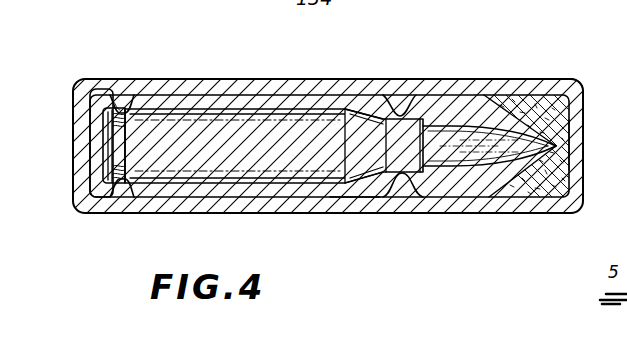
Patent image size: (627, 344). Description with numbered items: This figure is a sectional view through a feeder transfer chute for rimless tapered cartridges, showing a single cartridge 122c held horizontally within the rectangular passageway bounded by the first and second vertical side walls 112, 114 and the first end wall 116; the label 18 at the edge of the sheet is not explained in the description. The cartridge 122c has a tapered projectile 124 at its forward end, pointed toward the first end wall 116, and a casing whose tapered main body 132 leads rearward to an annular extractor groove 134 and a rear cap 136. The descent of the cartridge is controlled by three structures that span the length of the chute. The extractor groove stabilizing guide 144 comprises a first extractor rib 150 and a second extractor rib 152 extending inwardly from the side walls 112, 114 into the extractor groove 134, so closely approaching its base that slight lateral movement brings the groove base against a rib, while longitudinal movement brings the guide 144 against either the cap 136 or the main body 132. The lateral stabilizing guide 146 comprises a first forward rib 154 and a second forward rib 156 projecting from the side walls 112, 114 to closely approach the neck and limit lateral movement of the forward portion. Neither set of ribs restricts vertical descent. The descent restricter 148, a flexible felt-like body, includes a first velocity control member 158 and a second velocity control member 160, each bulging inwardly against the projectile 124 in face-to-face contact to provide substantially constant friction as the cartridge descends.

The first vertical side wall 112 is at (257, 82).
The second vertical side wall 114 is at (372, 213).
The first end wall 116 is at (578, 128).
The housing end 18 is at (601, 203).
The cartridge 122c is at (312, 140).
The tapered projectile 124 is at (485, 150).
The tapered main body 132 is at (245, 162).
The annular extractor groove 134 is at (122, 158).
The rear cap 136 is at (77, 143).
The extractor groove stabilizing guide 144 is at (135, 54).
The lateral stabilizing guide 146 is at (446, 72).
The descent restricter 148 is at (583, 76).
The first extractor rib 150 is at (119, 102).
The second extractor rib 152 is at (118, 185).
The first forward rib 154 is at (392, 92).
The second forward rib 156 is at (400, 192).
The first velocity control member 158 is at (532, 102).
The second velocity control member 160 is at (550, 183).